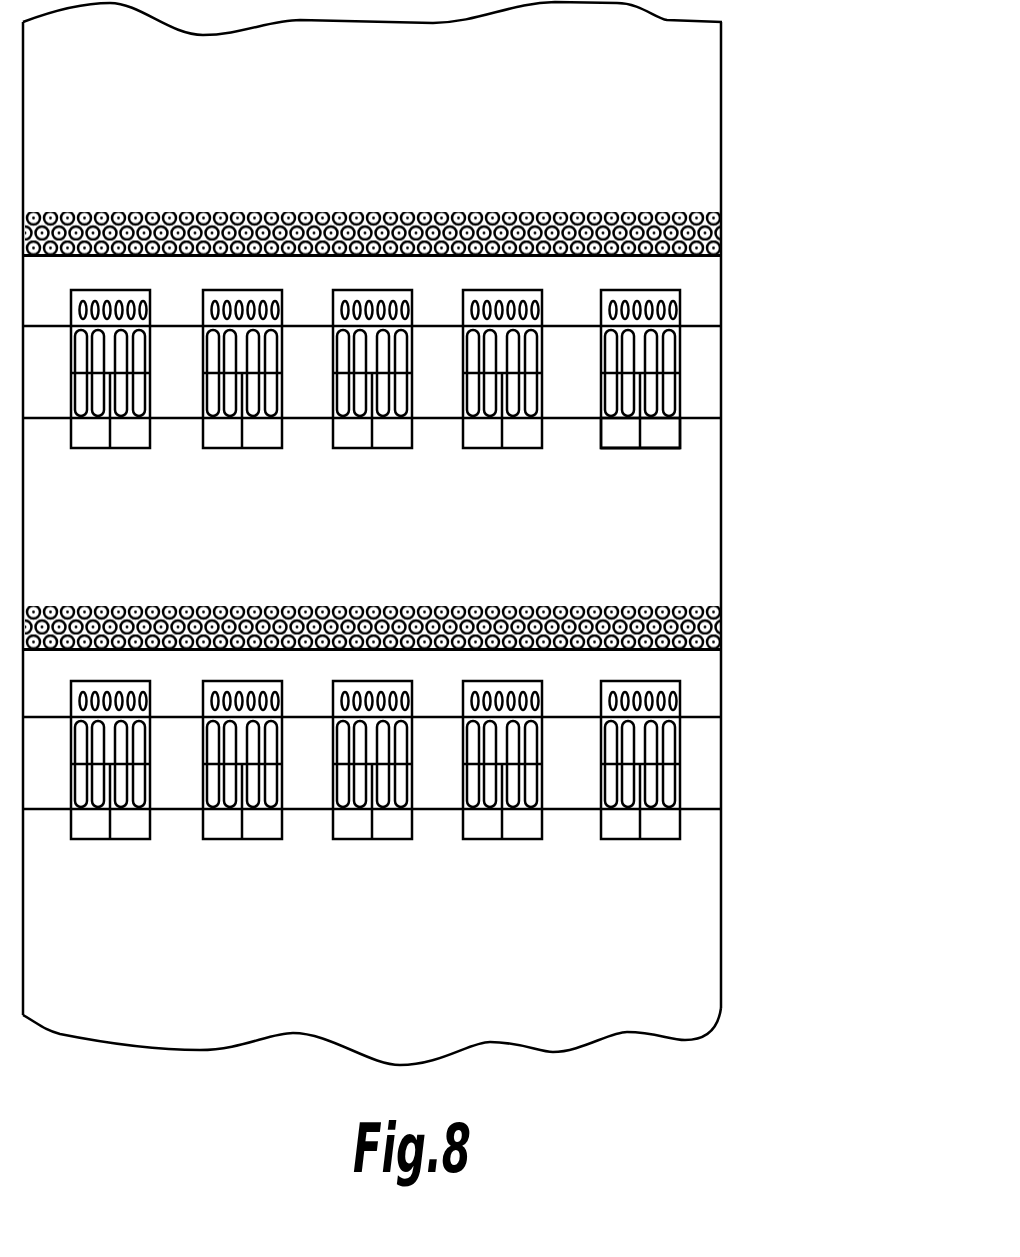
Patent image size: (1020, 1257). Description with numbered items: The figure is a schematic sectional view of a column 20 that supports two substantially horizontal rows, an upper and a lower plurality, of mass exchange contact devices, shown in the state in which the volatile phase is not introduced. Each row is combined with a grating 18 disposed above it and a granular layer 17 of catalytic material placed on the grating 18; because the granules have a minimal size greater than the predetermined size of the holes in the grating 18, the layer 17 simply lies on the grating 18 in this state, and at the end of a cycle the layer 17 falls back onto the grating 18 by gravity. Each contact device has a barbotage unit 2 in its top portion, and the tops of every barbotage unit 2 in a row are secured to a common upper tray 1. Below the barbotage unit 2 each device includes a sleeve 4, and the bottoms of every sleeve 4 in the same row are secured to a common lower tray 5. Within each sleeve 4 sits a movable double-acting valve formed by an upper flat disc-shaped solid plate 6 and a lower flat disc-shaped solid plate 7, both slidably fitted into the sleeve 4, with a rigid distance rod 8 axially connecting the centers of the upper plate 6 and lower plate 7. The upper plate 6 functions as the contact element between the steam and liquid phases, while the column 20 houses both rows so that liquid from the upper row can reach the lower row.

The upper tray 1 is at (755, 307).
The barbotage unit 2 is at (680, 693).
The sleeve 4 is at (663, 348).
The lower tray 5 is at (722, 415).
The upper plate 6 is at (680, 368).
The lower plate 7 is at (673, 448).
The distance rod 8 is at (643, 427).
The granular layer 17 is at (657, 222).
The grating 18 is at (713, 645).
The column 20 is at (722, 758).